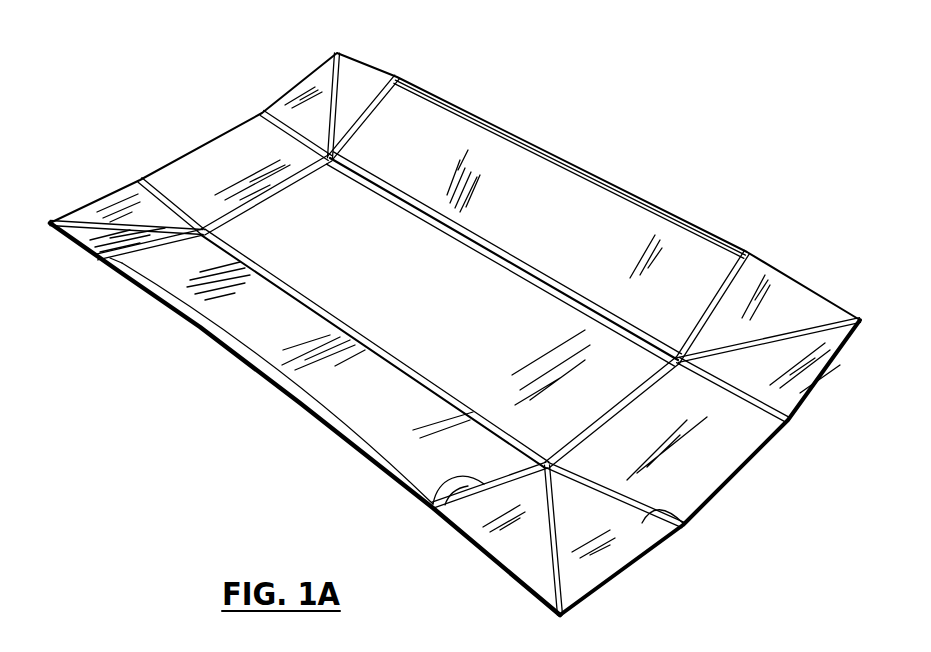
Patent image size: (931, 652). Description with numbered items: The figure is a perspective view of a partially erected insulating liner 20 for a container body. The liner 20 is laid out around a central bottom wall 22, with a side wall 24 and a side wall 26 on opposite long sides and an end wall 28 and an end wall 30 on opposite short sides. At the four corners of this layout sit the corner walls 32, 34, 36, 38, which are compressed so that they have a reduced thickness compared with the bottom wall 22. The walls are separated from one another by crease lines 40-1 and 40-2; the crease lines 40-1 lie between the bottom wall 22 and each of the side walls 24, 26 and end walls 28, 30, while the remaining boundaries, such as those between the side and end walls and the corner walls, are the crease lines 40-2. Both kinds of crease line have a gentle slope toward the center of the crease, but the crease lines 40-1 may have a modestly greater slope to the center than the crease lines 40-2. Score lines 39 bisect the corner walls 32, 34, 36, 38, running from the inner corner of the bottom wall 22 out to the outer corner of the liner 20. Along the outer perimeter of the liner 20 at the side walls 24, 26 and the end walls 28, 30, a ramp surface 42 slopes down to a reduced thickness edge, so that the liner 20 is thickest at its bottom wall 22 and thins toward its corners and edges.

The insulating liner 20 is at (690, 140).
The bottom wall 22 is at (449, 326).
The side wall 24 is at (532, 223).
The side wall 26 is at (352, 403).
The end wall 28 is at (684, 470).
The end wall 30 is at (215, 177).
The corner wall 32 is at (512, 560).
The corner wall 34 is at (791, 292).
The corner wall 36 is at (110, 197).
The corner wall 38 is at (360, 73).
The score line 39 is at (562, 552).
The crease line 40-1 is at (307, 174).
The crease line 40-2 is at (432, 505).
The ramp surface 42 is at (237, 347).